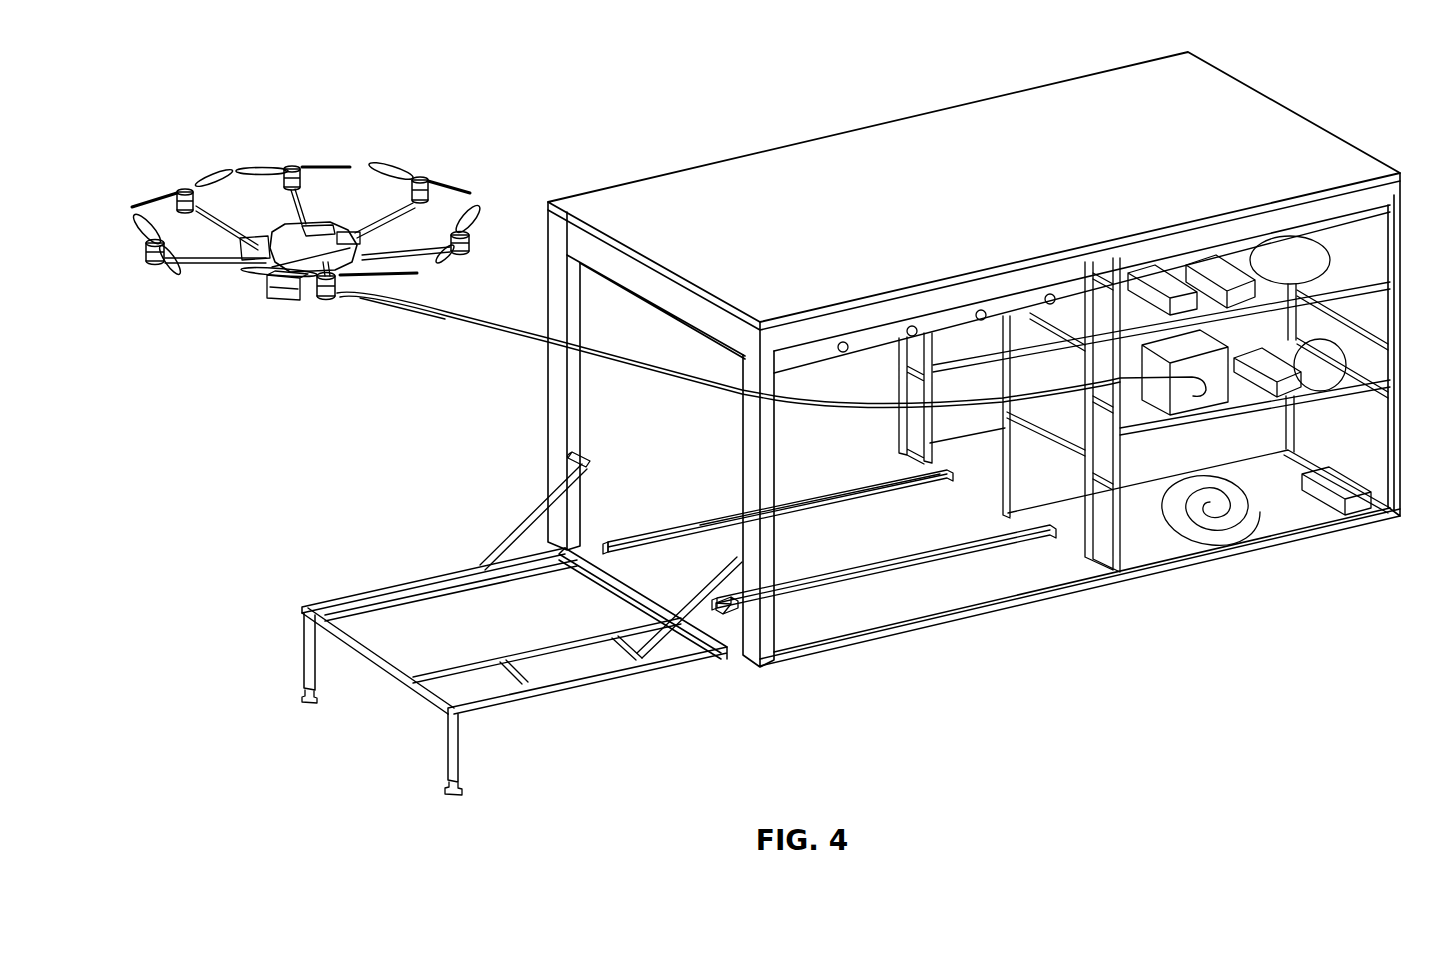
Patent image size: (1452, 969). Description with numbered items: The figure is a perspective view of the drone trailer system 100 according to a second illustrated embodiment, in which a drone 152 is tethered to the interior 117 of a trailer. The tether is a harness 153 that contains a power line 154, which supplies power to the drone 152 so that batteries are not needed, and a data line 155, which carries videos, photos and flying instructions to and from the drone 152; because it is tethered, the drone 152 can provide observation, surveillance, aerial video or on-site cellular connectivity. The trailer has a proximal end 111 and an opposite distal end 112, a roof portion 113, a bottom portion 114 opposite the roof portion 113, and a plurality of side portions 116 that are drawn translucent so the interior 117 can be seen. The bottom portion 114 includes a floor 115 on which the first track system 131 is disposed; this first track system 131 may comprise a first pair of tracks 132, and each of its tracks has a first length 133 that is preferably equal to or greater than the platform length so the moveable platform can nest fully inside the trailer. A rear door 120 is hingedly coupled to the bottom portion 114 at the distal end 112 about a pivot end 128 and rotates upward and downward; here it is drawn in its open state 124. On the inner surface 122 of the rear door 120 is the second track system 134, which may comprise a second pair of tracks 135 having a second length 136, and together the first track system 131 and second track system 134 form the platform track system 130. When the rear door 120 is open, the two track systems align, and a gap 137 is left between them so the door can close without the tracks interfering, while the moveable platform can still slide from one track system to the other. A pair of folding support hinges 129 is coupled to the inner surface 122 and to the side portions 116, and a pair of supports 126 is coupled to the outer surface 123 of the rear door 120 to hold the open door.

The drone trailer system 100 is at (518, 72).
The proximal end 111 is at (1285, 100).
The distal end 112 is at (650, 260).
The roof portion 113 is at (805, 155).
The bottom portion 114 is at (1030, 600).
The floor 115 is at (895, 600).
The plurality of side portions 116 is at (550, 265).
The interior 117 is at (830, 605).
The rear door 120 is at (577, 690).
The inner surface 122 is at (705, 640).
The outer surface 123 is at (655, 682).
The open state 124 is at (486, 787).
The support 126 is at (300, 698).
The pivot end 128 is at (427, 697).
The folding support hinge 129 is at (582, 462).
The platform track system 130 is at (301, 532).
The first track system 131 is at (915, 490).
The first pair of tracks 132 is at (825, 505).
The first length 133 is at (962, 560).
The second track system 134 is at (415, 670).
The second pair of tracks 135 is at (488, 648).
The second length 136 is at (553, 622).
The gap 137 is at (600, 548).
The drone 152 is at (268, 166).
The harness 153 is at (375, 312).
The power line 154 is at (437, 325).
The data line 155 is at (500, 340).